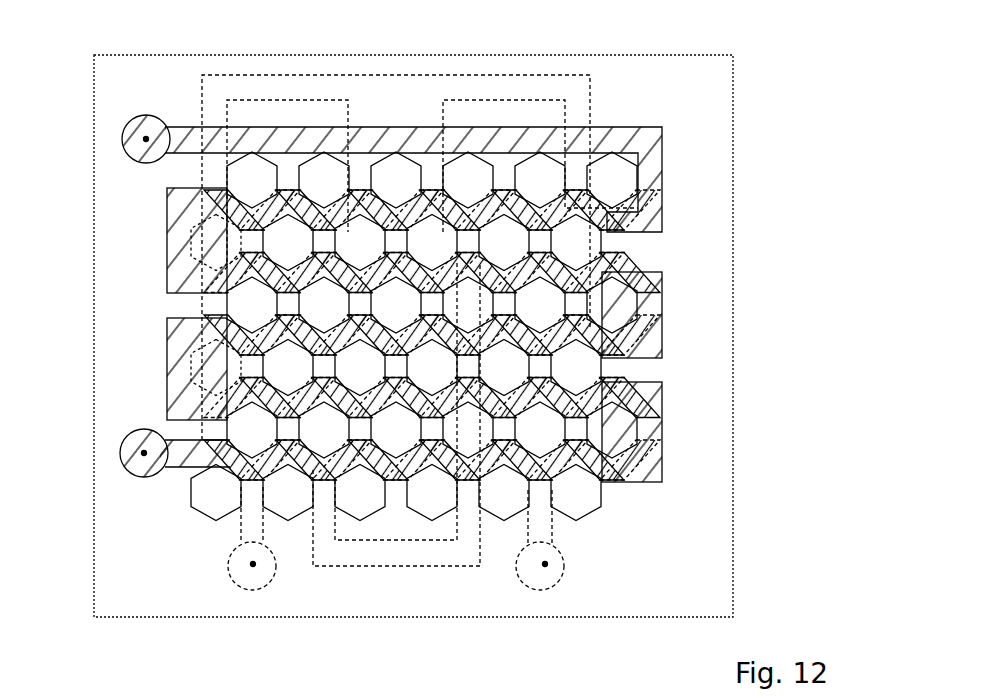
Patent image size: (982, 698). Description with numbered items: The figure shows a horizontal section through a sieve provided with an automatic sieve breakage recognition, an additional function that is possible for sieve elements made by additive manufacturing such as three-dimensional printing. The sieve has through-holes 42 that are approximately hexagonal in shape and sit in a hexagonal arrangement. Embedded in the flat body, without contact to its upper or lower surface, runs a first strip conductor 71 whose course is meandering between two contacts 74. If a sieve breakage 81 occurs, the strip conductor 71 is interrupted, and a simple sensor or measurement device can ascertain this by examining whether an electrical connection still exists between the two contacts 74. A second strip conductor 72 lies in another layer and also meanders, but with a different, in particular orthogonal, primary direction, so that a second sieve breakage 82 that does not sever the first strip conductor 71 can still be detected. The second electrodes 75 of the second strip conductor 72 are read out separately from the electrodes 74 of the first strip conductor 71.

The through-holes 42 is at (615, 437).
The strip conductor 71 is at (490, 304).
The second strip conductor 72 is at (577, 303).
The contacts 74 is at (245, 302).
The second electrodes 75 is at (253, 564).
The sieve breakage 81 is at (497, 362).
The second sieve breakage 82 is at (210, 272).